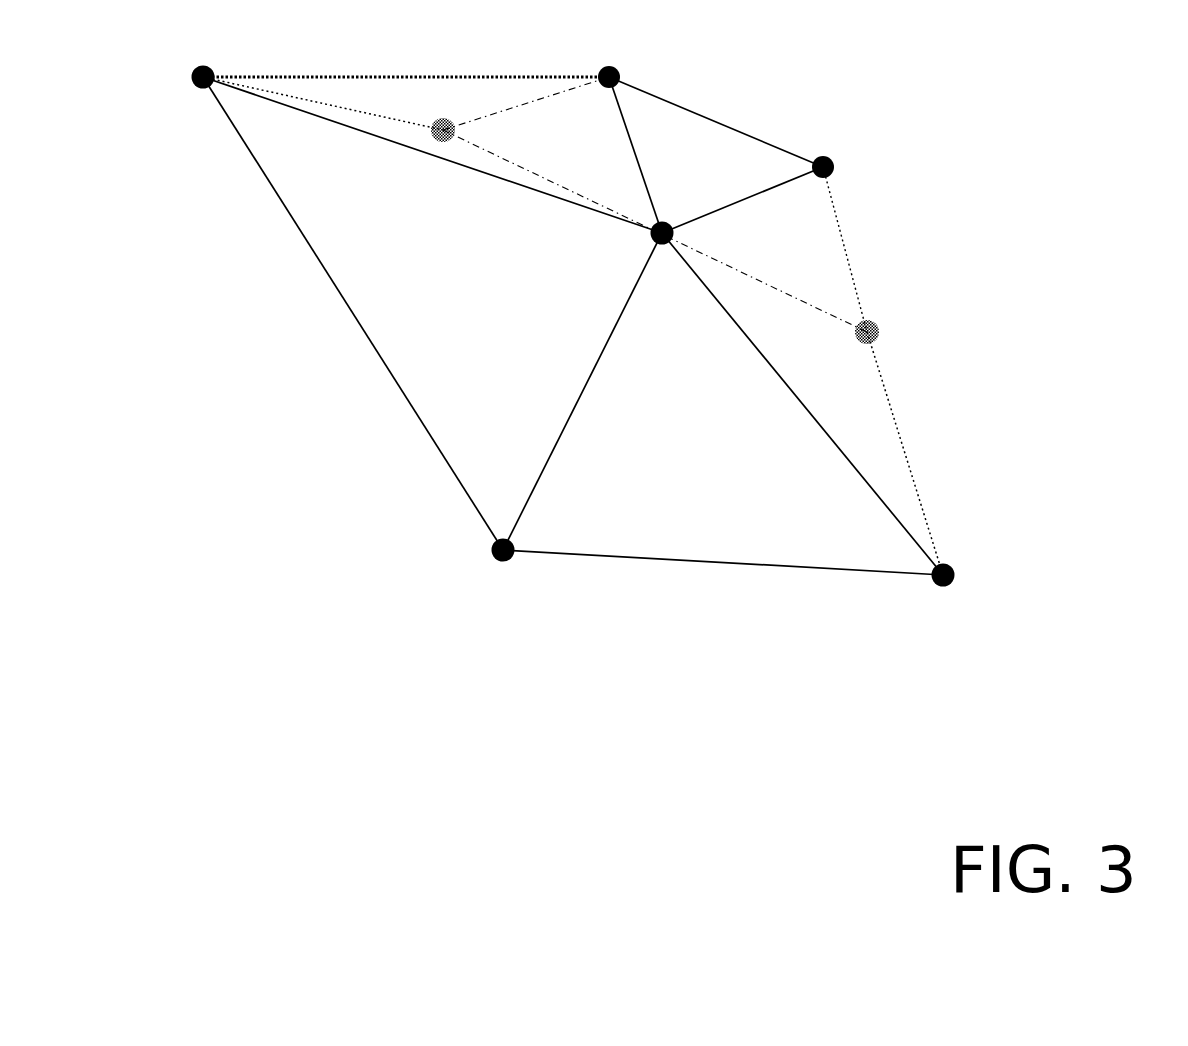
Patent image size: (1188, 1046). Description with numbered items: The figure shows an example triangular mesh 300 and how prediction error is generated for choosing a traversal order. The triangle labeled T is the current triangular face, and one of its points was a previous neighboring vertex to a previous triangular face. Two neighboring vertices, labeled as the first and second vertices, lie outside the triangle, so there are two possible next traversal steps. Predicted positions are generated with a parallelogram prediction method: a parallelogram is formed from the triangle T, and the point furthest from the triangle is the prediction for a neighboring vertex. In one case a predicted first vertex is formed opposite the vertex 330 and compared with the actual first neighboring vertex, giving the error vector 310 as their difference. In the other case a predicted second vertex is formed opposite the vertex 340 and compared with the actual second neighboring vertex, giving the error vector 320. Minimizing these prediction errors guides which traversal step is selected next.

The triangular mesh 300 is at (671, 318).
The error vector 310 is at (323, 103).
The error vector 320 is at (910, 453).
The vertex 330 is at (857, 160).
The vertex 340 is at (637, 61).